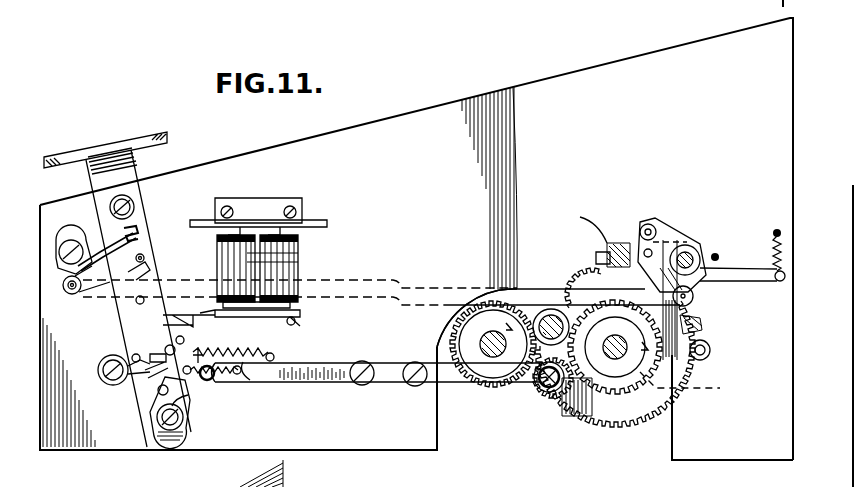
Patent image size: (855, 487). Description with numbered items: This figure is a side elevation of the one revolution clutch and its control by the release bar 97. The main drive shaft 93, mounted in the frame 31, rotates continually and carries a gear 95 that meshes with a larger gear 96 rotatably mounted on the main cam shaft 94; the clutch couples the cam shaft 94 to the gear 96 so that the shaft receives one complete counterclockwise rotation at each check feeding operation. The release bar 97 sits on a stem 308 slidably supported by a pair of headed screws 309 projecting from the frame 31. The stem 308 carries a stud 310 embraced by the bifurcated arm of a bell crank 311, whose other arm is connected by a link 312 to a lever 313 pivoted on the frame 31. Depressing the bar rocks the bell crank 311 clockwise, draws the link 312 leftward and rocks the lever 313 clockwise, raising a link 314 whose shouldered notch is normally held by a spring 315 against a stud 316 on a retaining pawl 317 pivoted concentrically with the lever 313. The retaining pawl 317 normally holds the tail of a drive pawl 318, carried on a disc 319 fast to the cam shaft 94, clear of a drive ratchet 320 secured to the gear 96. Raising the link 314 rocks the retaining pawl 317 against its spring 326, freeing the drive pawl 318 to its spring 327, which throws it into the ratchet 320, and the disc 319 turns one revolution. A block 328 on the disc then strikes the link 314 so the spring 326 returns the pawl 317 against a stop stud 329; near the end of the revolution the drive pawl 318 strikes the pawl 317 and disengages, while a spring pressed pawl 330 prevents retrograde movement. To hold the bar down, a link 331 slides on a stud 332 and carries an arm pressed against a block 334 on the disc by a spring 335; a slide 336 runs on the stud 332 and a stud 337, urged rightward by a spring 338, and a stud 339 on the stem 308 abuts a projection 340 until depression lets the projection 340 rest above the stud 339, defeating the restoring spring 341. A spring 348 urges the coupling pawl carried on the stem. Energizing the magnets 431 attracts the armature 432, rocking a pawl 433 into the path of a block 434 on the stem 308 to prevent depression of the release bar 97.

The frame 31 is at (332, 437).
The main drive shaft 93 is at (490, 340).
The main cam shaft 94 is at (622, 353).
The gear 95 is at (440, 343).
The gear 96 is at (563, 413).
The release bar 97 is at (102, 150).
The stem 308 is at (133, 163).
The headed screws 309 is at (135, 203).
The stud 310 is at (139, 232).
The bell crank 311 is at (88, 232).
The link 312 is at (335, 283).
The lever 313 is at (691, 250).
The link 314 is at (633, 250).
The spring 315 is at (694, 304).
The stud 316 is at (650, 252).
The retaining pawl 317 is at (588, 223).
The drive pawl 318 is at (598, 255).
The disc 319 is at (641, 421).
The drive ratchet 320 is at (695, 388).
The spring 326 is at (775, 230).
The spring 327 is at (569, 268).
The block 328 is at (703, 324).
The stop stud 329 is at (719, 257).
The spring pressed pawl 330 is at (711, 350).
The link 331 is at (333, 345).
The stud 332 is at (118, 356).
The block 334 is at (584, 392).
The spring 335 is at (278, 383).
The slide 336 is at (133, 385).
The stud 337 is at (208, 381).
The spring 338 is at (243, 361).
The stud 339 is at (185, 402).
The projection 340 is at (160, 410).
The spring 341 is at (150, 370).
The spring 348 is at (247, 352).
The magnets 431 is at (298, 263).
The armature 432 is at (197, 312).
The pawl 433 is at (137, 302).
The block 434 is at (145, 258).